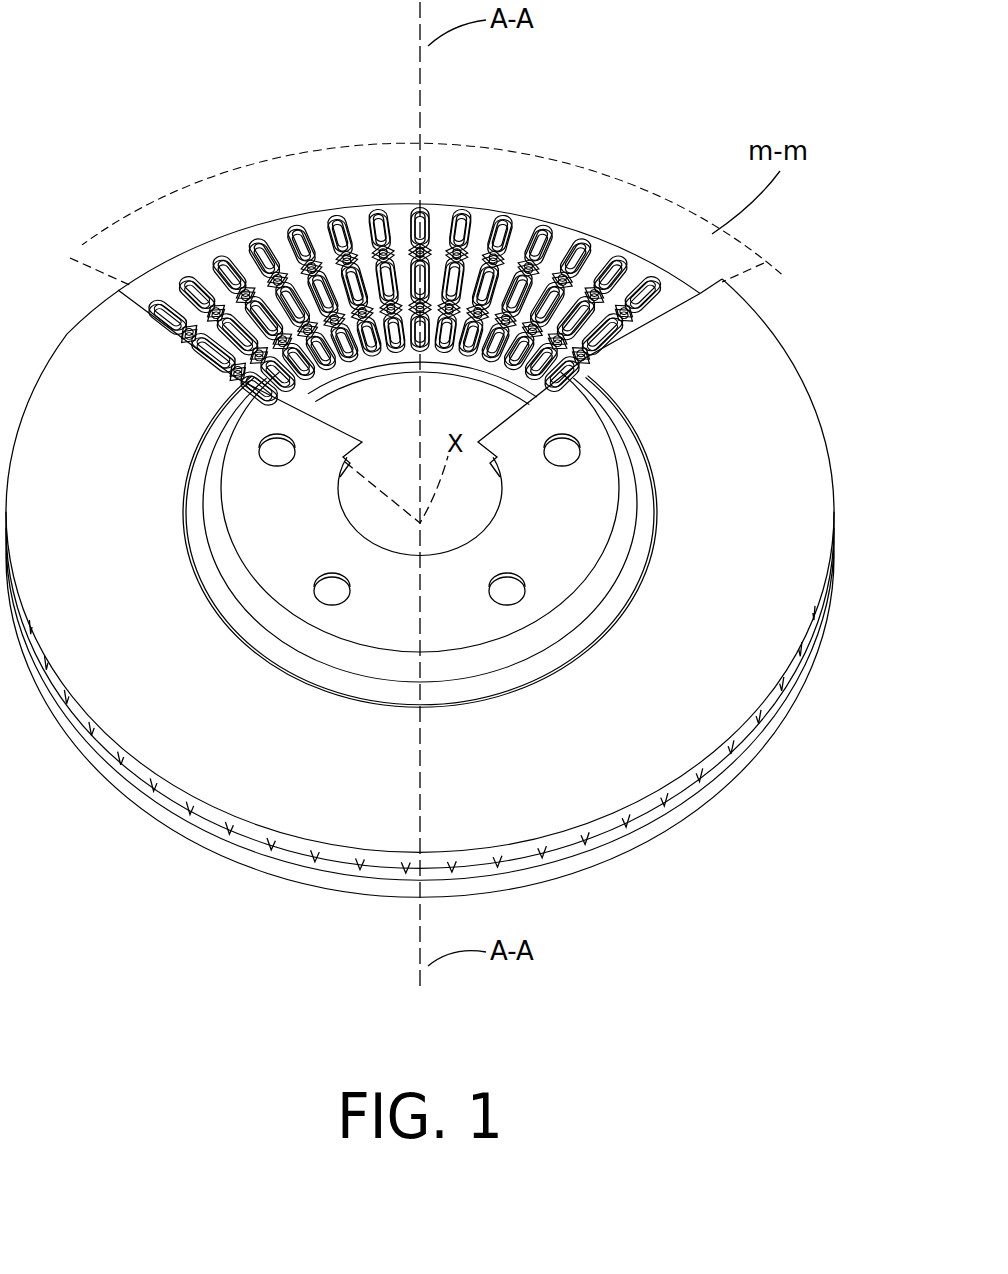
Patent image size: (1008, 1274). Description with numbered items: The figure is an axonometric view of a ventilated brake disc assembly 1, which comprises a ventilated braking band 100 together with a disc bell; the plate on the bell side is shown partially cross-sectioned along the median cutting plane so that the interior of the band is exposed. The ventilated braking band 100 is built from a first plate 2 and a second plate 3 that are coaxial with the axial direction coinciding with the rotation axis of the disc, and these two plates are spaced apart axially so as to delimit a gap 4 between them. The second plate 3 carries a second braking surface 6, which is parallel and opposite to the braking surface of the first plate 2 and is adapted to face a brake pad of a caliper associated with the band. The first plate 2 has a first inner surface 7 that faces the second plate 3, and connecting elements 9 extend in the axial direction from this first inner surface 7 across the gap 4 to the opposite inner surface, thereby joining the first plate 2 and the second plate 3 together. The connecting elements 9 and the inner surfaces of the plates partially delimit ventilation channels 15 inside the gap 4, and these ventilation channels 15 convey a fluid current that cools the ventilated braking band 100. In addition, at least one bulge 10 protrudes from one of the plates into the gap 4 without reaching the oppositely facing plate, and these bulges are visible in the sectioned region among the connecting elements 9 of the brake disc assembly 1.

The ventilated brake disc assembly 1 is at (866, 306).
The first plate 2 is at (663, 828).
The second plate 3 is at (780, 532).
The gap 4 is at (605, 852).
The second braking surface 6 is at (807, 448).
The first inner surface 7 is at (645, 272).
The connecting elements 9 is at (540, 272).
The bulge 10 is at (237, 253).
The ventilation channels 15 is at (363, 227).
The ventilated braking band 100 is at (735, 678).